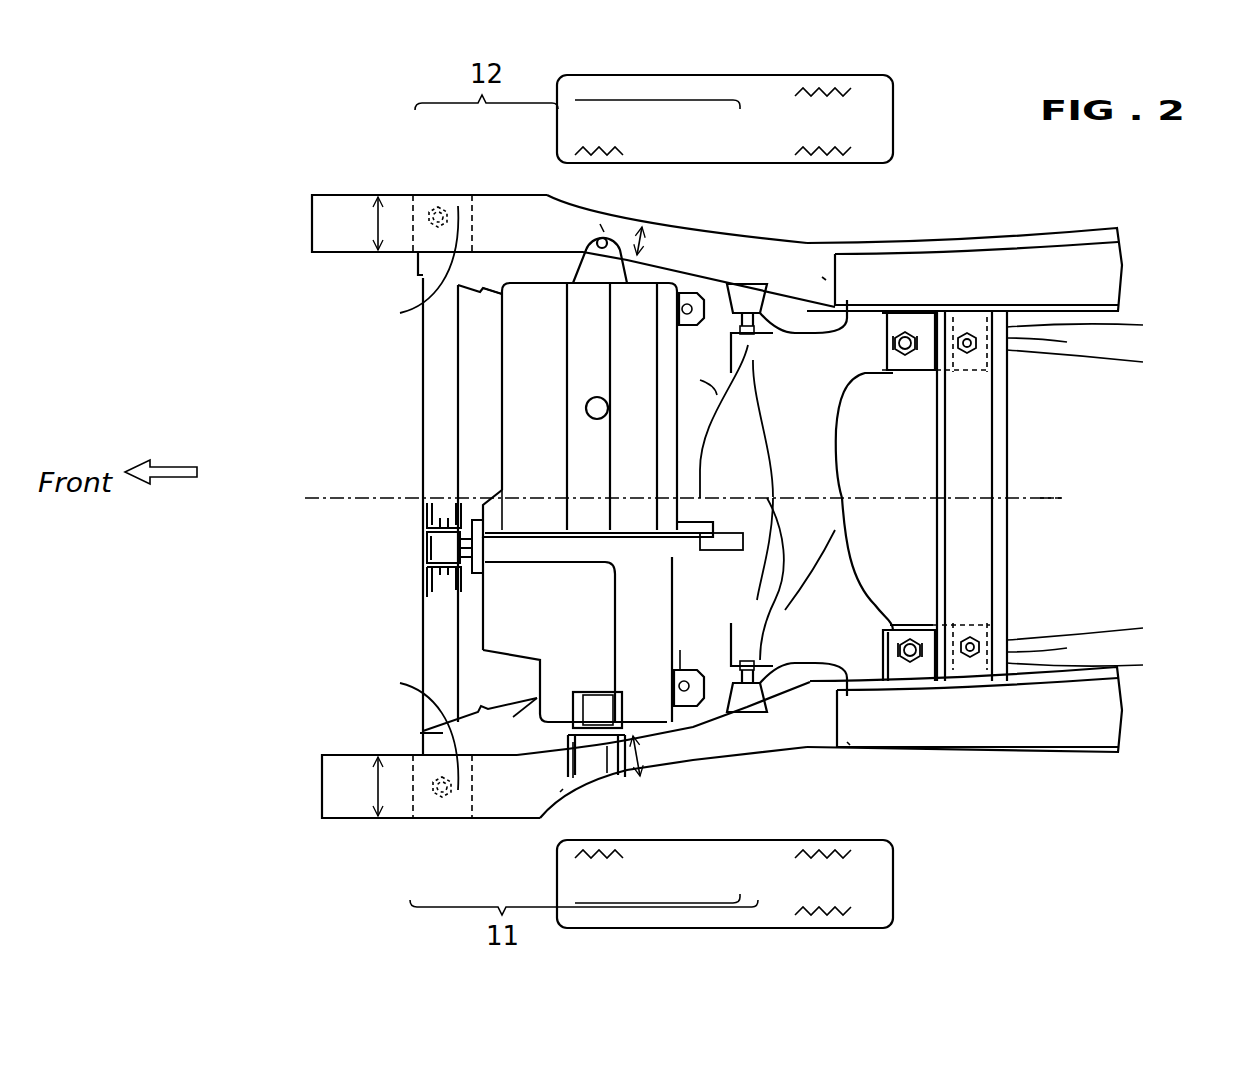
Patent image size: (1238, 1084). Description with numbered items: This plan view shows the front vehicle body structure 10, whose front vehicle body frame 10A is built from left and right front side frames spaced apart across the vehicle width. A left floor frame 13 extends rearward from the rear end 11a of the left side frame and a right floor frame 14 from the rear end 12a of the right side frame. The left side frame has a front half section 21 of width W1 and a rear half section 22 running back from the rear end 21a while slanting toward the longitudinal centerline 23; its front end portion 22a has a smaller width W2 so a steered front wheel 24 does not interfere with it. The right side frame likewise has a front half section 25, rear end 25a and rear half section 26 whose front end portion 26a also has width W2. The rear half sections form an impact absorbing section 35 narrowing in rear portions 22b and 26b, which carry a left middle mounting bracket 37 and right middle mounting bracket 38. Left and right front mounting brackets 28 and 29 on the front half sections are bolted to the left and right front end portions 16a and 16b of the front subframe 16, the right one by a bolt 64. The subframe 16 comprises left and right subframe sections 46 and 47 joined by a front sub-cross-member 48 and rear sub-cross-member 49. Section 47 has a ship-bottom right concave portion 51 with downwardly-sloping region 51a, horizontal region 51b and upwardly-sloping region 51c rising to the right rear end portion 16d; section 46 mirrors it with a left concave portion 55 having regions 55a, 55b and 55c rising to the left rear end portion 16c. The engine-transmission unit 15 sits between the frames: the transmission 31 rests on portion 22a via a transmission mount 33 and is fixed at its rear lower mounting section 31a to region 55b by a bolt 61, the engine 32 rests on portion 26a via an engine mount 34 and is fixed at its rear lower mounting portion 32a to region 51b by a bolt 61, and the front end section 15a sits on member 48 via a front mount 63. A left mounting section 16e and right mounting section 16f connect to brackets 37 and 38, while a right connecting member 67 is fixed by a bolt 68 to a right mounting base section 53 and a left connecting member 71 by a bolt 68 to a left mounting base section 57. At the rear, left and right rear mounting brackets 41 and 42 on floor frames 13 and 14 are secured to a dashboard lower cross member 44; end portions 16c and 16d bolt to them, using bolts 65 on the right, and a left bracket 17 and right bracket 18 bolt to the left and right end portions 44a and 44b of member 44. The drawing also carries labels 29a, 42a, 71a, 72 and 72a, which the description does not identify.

The front vehicle body structure 10 is at (265, 160).
The front vehicle body frame 10A is at (315, 190).
The rear end of left front side frame 11a is at (847, 748).
The rear end of right front side frame 12a is at (823, 277).
The left floor frame 13 is at (1050, 750).
The right floor frame 14 is at (1057, 241).
The engine-transmission unit 15 is at (498, 442).
The front end section of engine-transmission unit 15a is at (492, 585).
The front subframe 16 is at (423, 375).
The left front end portion of front subframe 16a is at (443, 747).
The right front end portion of front subframe 16b is at (427, 267).
The left rear end portion of front subframe 16c is at (863, 666).
The right rear end portion of front subframe 16d is at (863, 317).
The left mounting section 16e is at (853, 627).
The right mounting section 16f is at (758, 378).
The left bracket 17 is at (973, 637).
The right bracket 18 is at (967, 372).
The front half section of left front side frame 21 is at (488, 807).
The rear end of front half section 21a is at (560, 792).
The rear half section of left front side frame 22 is at (735, 757).
The front end portion of left rear half section 22a is at (607, 772).
The left-side rear portion 22b is at (767, 745).
The longitudinal centerline 23 is at (1055, 497).
The front wheel 24 is at (887, 120).
The front half section of right front side frame 25 is at (453, 203).
The rear end of right front half section 25a is at (567, 212).
The rear half section of right front side frame 26 is at (700, 245).
The front end portion of right rear half section 26a is at (607, 228).
The right-side rear portion 26b is at (765, 258).
The left front mounting bracket 28 is at (410, 800).
The right front mounting bracket 29 is at (425, 212).
The bolt bracket 29a is at (440, 260).
The transmission 31 is at (492, 624).
The rear lower mounting section of transmission 31a is at (698, 670).
The engine 32 is at (513, 330).
The rear lower mounting portion of engine 32a is at (705, 300).
The transmission mount 33 is at (593, 703).
The engine mount 34 is at (590, 226).
The impact absorbing section 35 is at (797, 763).
The left middle mounting bracket 37 is at (745, 700).
The right middle mounting bracket 38 is at (765, 318).
The left rear mounting bracket 41 is at (927, 667).
The right rear mounting bracket 42 is at (918, 322).
The mounting nut 42a is at (905, 352).
The dashboard lower cross member 44 is at (1003, 438).
The left end portion of dashboard lower cross member 44a is at (1059, 641).
The right end portion of dashboard lower cross member 44b is at (1064, 344).
The left subframe section 46 is at (767, 612).
The right subframe section 47 is at (717, 390).
The front sub-cross-member 48 is at (423, 463).
The rear sub-cross-member 49 is at (843, 523).
The right concave portion 51 is at (655, 320).
The right downwardly-sloping region 51a is at (517, 266).
The right horizontal region 51b is at (655, 284).
The right upwardly-sloping region 51c is at (830, 372).
The right mounting base section 53 is at (735, 365).
The left concave portion 55 is at (647, 718).
The left downwardly-sloping region 55a is at (508, 718).
The left horizontal region 55b is at (687, 740).
The left upwardly-sloping region 55c is at (890, 625).
The left mounting base section 57 is at (722, 550).
The bolt 61 is at (667, 327).
The front mount 63 is at (433, 548).
The bolt 64 is at (437, 212).
The bolts 65 is at (908, 325).
The right connecting member 67 is at (608, 407).
The bolt 68 is at (753, 362).
The left connecting member 71 is at (760, 650).
The lower flange edge 71a is at (1125, 630).
The upper flange line 72 is at (1094, 328).
The upper flange edge 72a is at (1101, 363).
The width of front half section W1 is at (352, 506).
The width of front end portion of rear half section W2 is at (665, 817).